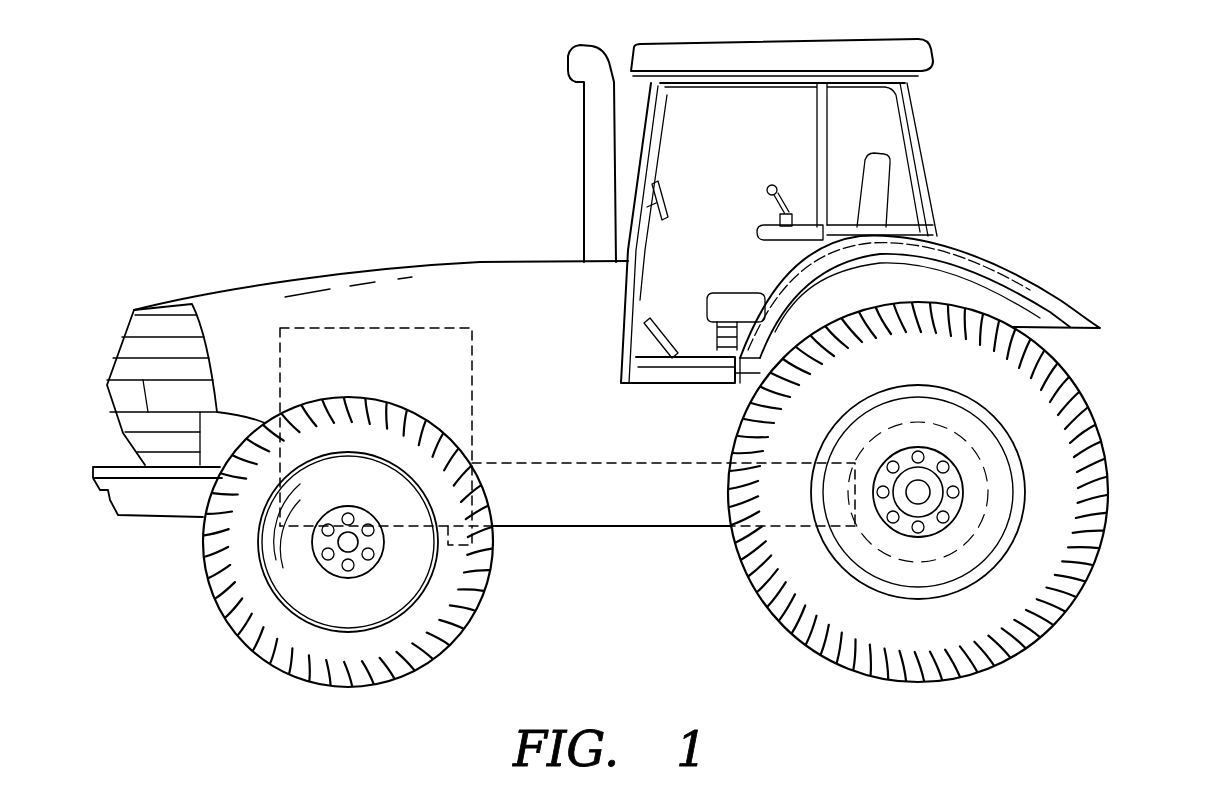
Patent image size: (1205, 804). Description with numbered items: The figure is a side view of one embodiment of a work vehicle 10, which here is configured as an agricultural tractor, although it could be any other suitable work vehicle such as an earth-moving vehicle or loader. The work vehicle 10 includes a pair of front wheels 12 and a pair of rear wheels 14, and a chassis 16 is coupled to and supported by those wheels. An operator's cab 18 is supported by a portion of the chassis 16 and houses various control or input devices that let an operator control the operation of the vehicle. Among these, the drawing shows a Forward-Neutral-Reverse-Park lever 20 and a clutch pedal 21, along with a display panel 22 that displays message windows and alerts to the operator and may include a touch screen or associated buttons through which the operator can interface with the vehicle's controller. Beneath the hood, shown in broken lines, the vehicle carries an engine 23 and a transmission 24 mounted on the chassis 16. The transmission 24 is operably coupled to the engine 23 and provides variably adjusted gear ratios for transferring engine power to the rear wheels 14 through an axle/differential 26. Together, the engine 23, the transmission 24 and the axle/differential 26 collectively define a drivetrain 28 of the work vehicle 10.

The work vehicle 10 is at (630, 363).
The front wheels 12 is at (204, 558).
The rear wheels 14 is at (947, 492).
The chassis 16 is at (560, 528).
The operator's cab 18 is at (860, 211).
The Forward-Neutral-Reverse-Park (FNRP) lever 20 is at (767, 190).
The clutch pedal 21 is at (675, 345).
The display panel 22 is at (663, 193).
The engine 23 is at (348, 327).
The transmission 24 is at (620, 462).
The axle/differential 26 is at (992, 495).
The drivetrain 28 is at (525, 285).